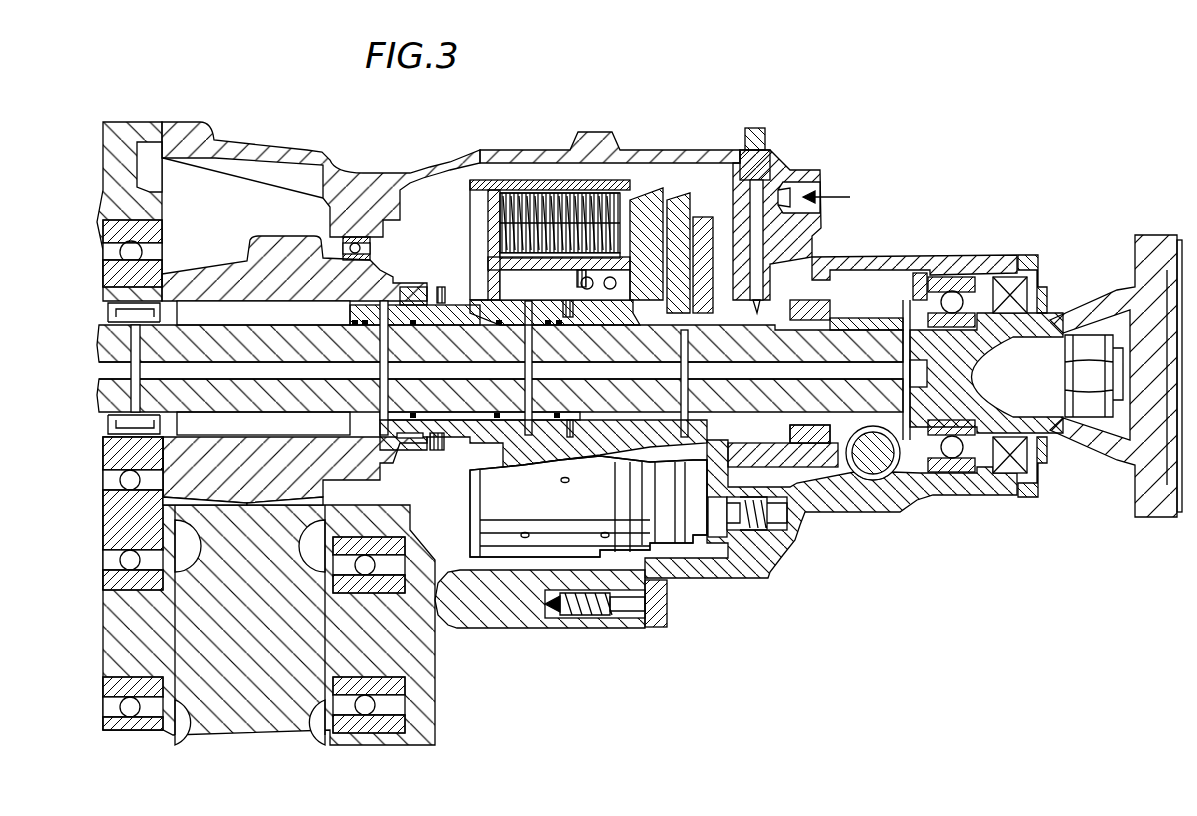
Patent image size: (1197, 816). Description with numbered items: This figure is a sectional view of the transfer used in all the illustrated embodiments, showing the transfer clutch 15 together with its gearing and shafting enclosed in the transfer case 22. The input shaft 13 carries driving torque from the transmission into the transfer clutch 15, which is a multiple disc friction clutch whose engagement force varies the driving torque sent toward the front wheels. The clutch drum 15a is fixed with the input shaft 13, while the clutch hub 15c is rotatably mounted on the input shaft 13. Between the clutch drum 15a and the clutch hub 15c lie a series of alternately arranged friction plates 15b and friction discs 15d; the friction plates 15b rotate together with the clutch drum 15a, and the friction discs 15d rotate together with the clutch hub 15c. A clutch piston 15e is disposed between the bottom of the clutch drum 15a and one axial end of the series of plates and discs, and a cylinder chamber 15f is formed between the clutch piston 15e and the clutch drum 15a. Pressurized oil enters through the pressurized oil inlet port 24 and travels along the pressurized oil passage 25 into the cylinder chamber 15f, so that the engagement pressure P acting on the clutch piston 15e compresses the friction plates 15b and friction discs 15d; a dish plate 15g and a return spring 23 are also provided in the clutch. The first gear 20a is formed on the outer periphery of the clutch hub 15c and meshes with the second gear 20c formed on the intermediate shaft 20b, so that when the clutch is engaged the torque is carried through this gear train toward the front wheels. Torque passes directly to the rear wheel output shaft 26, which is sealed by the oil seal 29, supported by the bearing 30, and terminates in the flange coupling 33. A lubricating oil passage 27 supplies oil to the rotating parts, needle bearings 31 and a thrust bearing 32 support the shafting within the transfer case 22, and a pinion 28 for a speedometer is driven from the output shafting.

The input shaft 13 is at (110, 343).
The transfer clutch 15 is at (583, 192).
The clutch drum 15a is at (610, 175).
The friction plates 15b is at (522, 190).
The clutch hub 15c is at (452, 300).
The friction discs 15d is at (553, 195).
The clutch piston 15e is at (687, 185).
The cylinder chamber 15f is at (683, 267).
The dish plate 15g is at (650, 195).
The first gear 20a is at (272, 238).
The intermediate shaft 20b is at (433, 652).
The second gear 20c is at (380, 500).
The transfer case 22 is at (362, 172).
The return spring 23 is at (580, 283).
The pressurized oil inlet port 24 is at (817, 191).
The pressurized oil passage 25 is at (760, 270).
The rear wheel output shaft 26 is at (870, 347).
The lubricating oil passage 27 is at (163, 368).
The pinion for a speedometer 28 is at (887, 467).
The oil seal 29 is at (1010, 473).
The bearing 30 is at (958, 483).
The needle bearings 31 is at (478, 440).
The thrust bearing 32 is at (553, 440).
The flange coupling 33 is at (1133, 512).